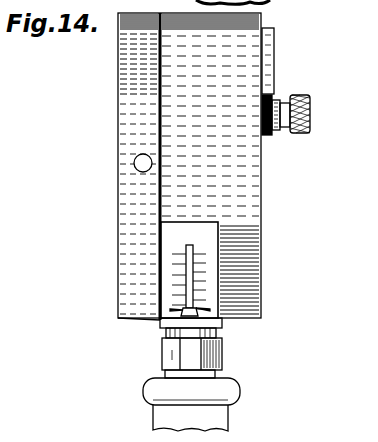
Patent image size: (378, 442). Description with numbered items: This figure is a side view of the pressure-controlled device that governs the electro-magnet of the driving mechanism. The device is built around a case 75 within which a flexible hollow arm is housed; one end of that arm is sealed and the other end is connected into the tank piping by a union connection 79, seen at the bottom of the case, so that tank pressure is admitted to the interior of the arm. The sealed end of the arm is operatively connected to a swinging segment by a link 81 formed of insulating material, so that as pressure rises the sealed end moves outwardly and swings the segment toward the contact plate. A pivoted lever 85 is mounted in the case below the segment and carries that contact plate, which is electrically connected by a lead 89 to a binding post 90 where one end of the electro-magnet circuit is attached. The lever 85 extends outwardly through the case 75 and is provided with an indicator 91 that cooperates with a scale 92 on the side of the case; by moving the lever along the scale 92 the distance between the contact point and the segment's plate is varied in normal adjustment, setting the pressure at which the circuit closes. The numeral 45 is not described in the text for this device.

The case 75 is at (196, 166).
The binding post 90 is at (309, 110).
The scale 92 is at (203, 282).
The pivoted lever 85 is at (187, 315).
The indicator 91 is at (216, 322).
The union connection 79 is at (210, 353).
The part 45 is at (7, 92).
The link 81 is at (8, 143).
The lead 89 is at (10, 206).